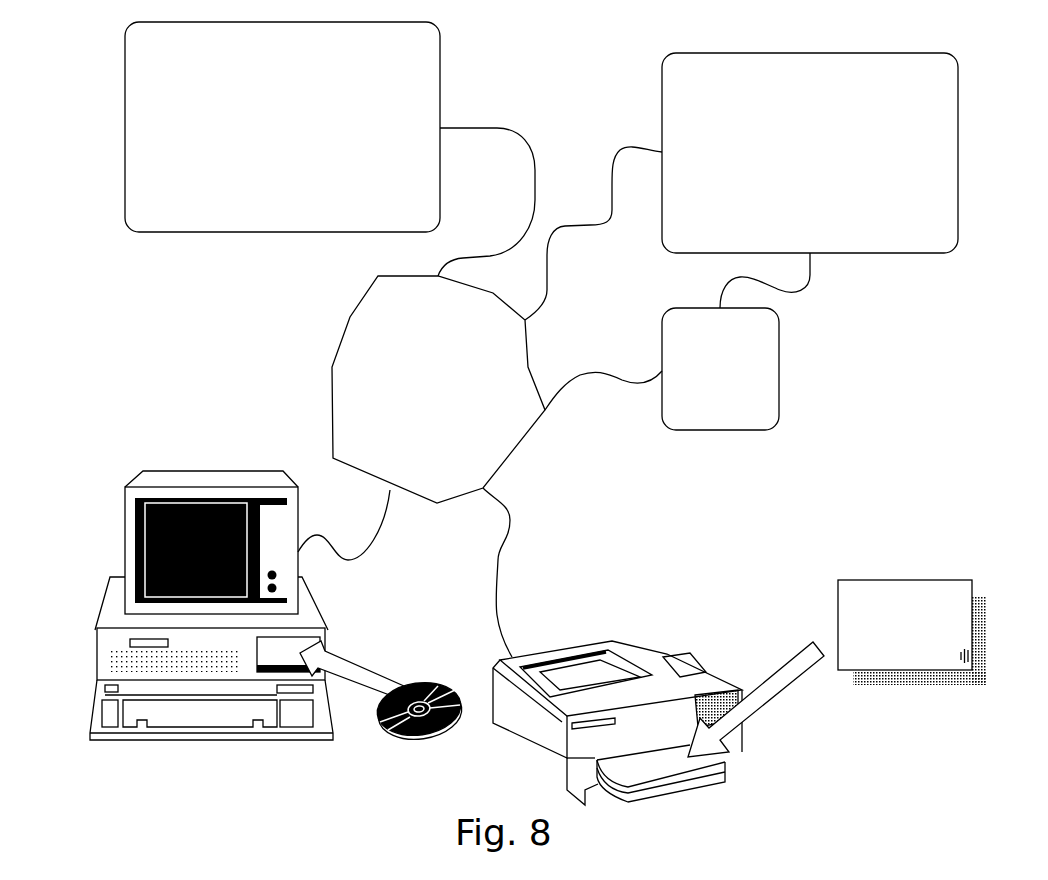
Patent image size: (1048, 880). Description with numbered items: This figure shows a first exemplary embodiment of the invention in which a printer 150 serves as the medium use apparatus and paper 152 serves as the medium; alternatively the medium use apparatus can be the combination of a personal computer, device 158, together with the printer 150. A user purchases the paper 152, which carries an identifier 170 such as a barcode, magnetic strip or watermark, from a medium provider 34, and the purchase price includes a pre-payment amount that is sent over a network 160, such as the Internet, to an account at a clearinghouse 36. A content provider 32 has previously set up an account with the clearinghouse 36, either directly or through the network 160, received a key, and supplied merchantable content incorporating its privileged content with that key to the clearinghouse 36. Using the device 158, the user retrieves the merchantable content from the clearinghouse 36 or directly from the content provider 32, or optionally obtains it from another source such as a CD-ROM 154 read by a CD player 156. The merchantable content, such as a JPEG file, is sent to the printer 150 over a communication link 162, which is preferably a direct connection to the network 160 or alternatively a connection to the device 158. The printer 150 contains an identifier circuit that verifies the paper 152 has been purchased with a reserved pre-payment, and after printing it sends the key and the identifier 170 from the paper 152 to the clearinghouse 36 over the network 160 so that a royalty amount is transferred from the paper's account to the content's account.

The medium provider 34 is at (142, 80).
The clearinghouse 36 is at (943, 85).
The content provider 32 is at (765, 340).
The network 160 is at (348, 353).
The device 158 is at (198, 486).
The CD player 156 is at (275, 650).
The CD-ROM 154 is at (392, 733).
The communication link 162 is at (498, 575).
The printer 150 is at (643, 653).
The paper 152 is at (883, 593).
The identifier 170 is at (970, 655).